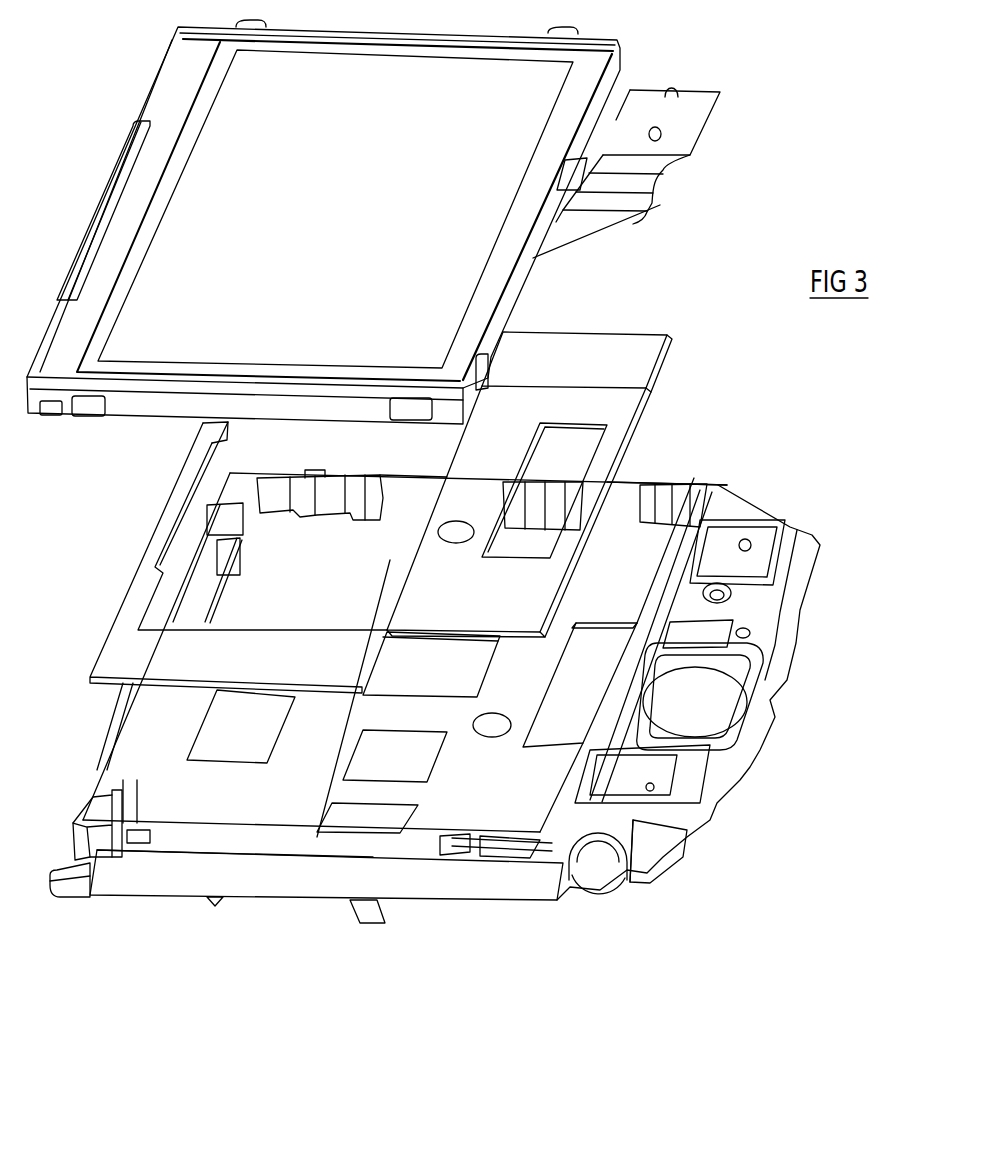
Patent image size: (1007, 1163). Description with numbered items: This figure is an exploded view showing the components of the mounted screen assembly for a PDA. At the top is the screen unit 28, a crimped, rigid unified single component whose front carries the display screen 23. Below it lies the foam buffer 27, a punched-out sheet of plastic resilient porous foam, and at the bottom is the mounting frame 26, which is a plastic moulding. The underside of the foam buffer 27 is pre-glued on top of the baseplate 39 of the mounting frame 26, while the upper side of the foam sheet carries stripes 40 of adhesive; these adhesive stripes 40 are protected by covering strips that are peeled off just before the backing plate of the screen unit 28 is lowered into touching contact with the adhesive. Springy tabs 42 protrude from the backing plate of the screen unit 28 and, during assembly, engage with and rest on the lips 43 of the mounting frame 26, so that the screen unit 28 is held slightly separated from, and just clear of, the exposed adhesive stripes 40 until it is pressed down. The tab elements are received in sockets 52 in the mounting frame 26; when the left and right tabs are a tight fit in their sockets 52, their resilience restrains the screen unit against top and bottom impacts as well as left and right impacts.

The display screen 23 is at (248, 122).
The mounting frame 26 is at (673, 805).
The foam buffer 27 is at (613, 405).
The screen unit 28 is at (503, 192).
The baseplate 39 is at (252, 790).
The stripes of adhesive 40 is at (597, 348).
The springy tabs 42 is at (88, 416).
The lips 43 is at (293, 853).
The sockets 52 is at (327, 497).